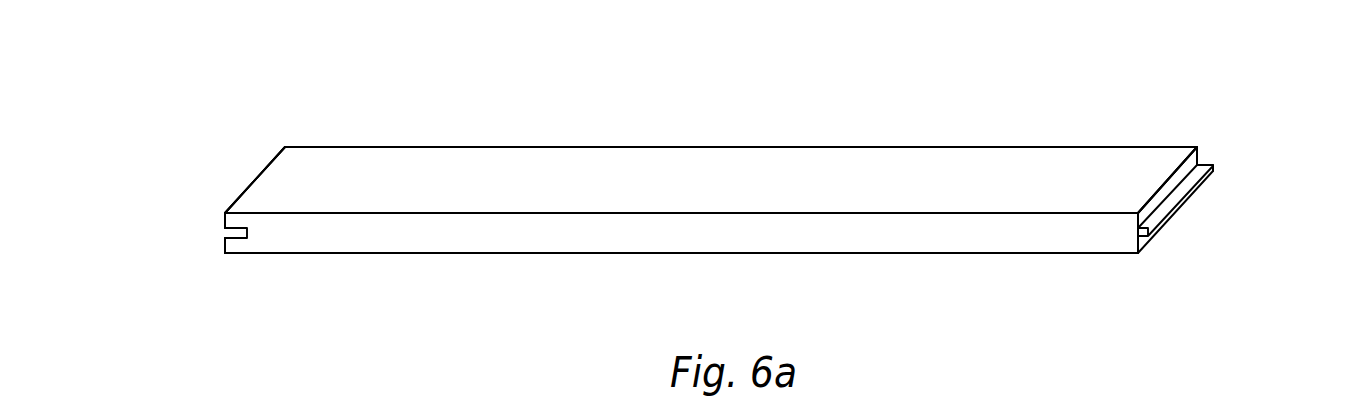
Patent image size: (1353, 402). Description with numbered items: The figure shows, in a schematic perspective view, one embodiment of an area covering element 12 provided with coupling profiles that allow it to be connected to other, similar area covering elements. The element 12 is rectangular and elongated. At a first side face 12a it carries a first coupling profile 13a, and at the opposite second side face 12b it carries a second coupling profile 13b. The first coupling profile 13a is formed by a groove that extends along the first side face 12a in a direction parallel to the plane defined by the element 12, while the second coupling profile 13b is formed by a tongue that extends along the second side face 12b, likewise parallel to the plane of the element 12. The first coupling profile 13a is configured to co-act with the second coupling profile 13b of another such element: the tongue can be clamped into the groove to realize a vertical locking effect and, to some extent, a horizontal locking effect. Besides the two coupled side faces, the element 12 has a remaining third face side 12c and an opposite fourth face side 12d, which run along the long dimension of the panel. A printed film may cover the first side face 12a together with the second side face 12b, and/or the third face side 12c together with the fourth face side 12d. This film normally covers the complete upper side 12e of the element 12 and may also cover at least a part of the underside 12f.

The area covering element 12 is at (310, 130).
The first side face 12a is at (219, 216).
The second side face 12b is at (1229, 152).
The third face side 12c is at (743, 146).
The fourth face side 12d is at (700, 230).
The upper side 12e is at (557, 177).
The underside 12f is at (557, 254).
The first coupling profile 13a is at (226, 231).
The second coupling profile 13b is at (1190, 196).